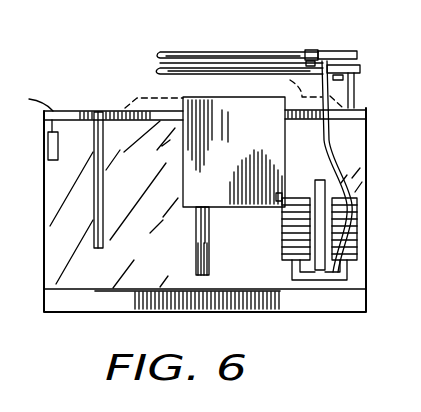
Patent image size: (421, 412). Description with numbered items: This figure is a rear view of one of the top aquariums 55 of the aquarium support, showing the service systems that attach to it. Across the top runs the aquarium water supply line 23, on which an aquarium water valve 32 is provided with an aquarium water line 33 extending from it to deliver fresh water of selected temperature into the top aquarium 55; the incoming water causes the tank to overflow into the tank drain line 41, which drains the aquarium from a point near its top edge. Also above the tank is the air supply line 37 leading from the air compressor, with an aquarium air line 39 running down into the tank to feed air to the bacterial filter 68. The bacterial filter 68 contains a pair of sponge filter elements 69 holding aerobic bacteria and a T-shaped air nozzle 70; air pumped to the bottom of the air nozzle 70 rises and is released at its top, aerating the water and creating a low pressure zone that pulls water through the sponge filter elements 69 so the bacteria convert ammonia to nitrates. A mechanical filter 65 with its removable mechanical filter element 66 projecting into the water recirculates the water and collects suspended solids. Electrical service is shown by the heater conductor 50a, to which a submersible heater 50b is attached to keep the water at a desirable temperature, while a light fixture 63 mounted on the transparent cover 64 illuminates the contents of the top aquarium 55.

The aquarium water supply line 23 is at (157, 75).
The aquarium water valve 32 is at (305, 50).
The aquarium water line 33 is at (352, 97).
The air supply line 37 is at (160, 53).
The aquarium air line 39 is at (323, 162).
The tank drain line 41 is at (96, 171).
The heater conductor 50a is at (21, 109).
The submersible heater 50b is at (58, 133).
The top aquarium 55 is at (127, 317).
The light fixture 63 is at (302, 91).
The transparent cover 64 is at (137, 123).
The mechanical filter 65 is at (250, 158).
The removable mechanical filter element 66 is at (196, 254).
The bacterial filter 68 is at (274, 217).
The sponge filter element 69 is at (352, 203).
The T-shaped air nozzle 70 is at (299, 277).